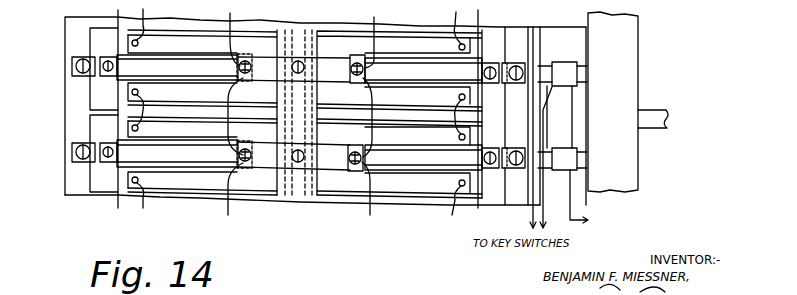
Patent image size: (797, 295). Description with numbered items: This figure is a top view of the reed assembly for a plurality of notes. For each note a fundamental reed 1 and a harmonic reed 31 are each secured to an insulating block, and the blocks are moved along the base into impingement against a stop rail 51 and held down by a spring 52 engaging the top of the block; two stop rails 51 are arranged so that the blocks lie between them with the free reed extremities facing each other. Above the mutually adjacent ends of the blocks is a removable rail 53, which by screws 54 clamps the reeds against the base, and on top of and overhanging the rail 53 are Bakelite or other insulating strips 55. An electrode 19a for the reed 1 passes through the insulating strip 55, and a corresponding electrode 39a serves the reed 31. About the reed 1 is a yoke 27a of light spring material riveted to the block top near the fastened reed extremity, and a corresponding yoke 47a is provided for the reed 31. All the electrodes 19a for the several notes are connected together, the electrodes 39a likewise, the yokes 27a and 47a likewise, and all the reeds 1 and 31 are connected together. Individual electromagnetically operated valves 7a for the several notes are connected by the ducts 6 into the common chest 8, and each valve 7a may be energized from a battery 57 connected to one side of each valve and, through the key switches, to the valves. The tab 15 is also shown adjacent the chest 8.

The fundamental reed 1 is at (137, 67).
The air duct 6 is at (581, 62).
The valve 7a is at (565, 65).
The chest 8 is at (627, 57).
The tab 15 is at (662, 128).
The electrode 19a is at (243, 66).
The yoke 27a is at (267, 47).
The harmonic reed 31 is at (443, 72).
The electrode 39a is at (365, 68).
The yoke 47a is at (328, 46).
The stop rail 51 is at (64, 73).
The spring 52 is at (80, 57).
The removable rail 53 is at (300, 195).
The screws 54 is at (298, 163).
The insulating strips 55 is at (337, 165).
The battery 57 is at (633, 199).